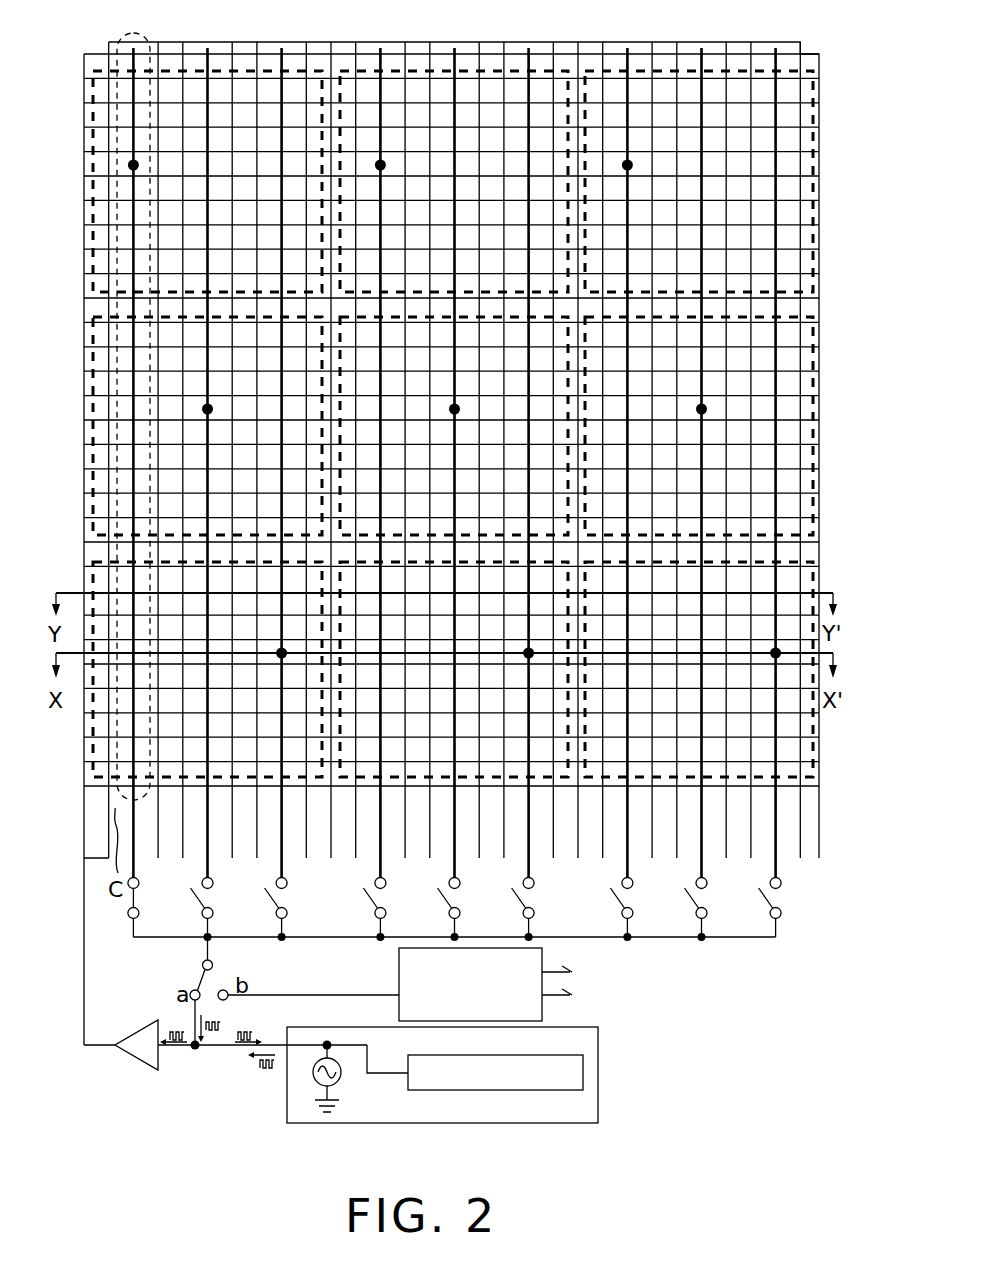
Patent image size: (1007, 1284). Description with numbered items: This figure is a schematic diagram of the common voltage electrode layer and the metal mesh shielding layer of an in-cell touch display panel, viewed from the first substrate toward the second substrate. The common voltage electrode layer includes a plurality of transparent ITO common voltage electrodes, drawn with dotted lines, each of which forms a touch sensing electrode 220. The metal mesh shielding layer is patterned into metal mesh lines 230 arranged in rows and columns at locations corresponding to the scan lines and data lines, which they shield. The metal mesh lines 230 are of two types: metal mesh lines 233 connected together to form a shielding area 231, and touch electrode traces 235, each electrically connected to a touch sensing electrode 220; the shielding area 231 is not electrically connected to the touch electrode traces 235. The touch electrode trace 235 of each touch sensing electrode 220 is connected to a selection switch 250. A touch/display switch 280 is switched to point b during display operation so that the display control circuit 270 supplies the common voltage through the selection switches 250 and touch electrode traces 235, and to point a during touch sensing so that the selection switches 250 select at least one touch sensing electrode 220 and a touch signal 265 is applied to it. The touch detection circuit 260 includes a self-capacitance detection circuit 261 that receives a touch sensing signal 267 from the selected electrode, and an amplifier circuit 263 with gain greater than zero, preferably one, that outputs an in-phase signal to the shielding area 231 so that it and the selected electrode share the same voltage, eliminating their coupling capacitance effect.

The touch sensing electrode 220 is at (218, 71).
The metal mesh lines 230 is at (463, 543).
The shielding area 231 is at (97, 860).
The metal mesh lines 233 is at (600, 848).
The touch electrode traces 235 is at (777, 832).
The selection switches 250 is at (758, 903).
The touch detection circuit 260 is at (442, 1075).
The self-capacitance detection circuit 261 is at (495, 1072).
The amplifier circuit 263 is at (138, 1063).
The touch signal 265 is at (268, 1073).
The touch sensing signal 267 is at (262, 1030).
The display control circuit 270 is at (552, 984).
The touch/display switch 280 is at (222, 985).